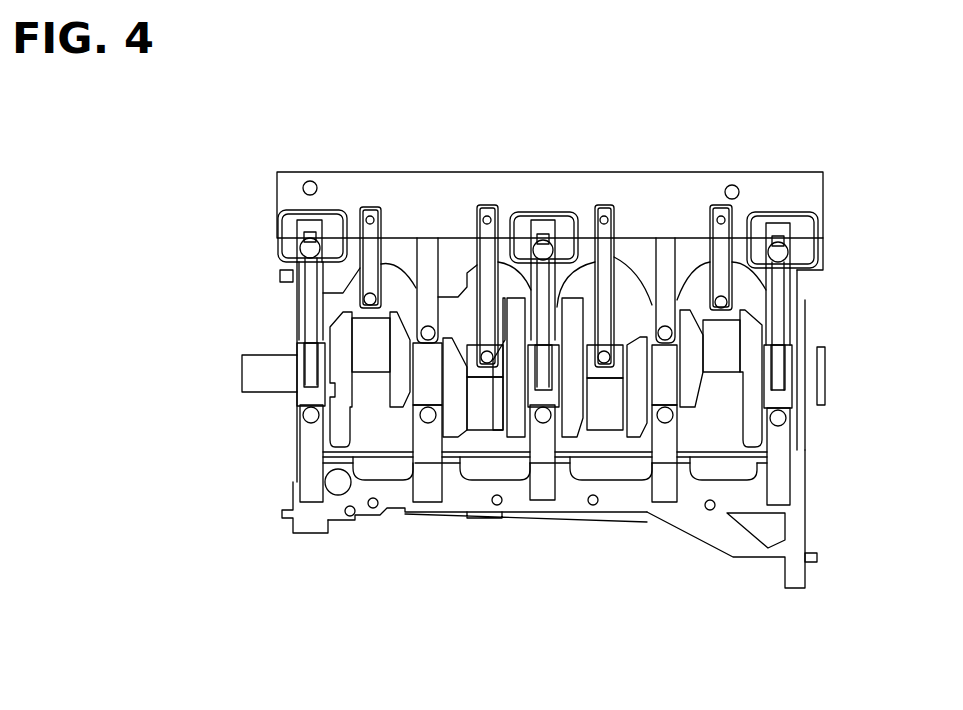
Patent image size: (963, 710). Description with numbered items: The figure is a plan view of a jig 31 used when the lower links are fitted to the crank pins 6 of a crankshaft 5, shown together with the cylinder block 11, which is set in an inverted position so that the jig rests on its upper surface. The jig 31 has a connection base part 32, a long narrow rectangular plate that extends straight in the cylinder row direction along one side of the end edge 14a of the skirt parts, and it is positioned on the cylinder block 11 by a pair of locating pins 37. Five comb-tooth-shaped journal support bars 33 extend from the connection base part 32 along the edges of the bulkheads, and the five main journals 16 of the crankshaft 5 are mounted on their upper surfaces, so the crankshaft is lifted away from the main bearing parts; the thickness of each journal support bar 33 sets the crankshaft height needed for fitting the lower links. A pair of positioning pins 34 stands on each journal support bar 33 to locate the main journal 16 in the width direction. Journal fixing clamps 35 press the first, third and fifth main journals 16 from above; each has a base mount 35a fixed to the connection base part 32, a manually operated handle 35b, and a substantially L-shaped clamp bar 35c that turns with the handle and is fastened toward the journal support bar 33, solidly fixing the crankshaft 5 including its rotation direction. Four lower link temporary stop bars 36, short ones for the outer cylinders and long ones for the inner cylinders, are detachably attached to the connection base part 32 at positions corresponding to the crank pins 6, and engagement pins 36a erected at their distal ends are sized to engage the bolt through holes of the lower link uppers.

The crankshaft 5 is at (288, 406).
The crank pin 6 is at (365, 337).
The cylinder block 11 is at (727, 562).
The end edge 14a is at (628, 497).
The main journal 16 is at (800, 360).
The jig 31 is at (822, 165).
The connection base part 32 is at (672, 205).
The journal support bar 33 is at (308, 455).
The positioning pin 34 is at (428, 325).
The journal fixing clamp 35 is at (548, 258).
The base mount 35a is at (292, 230).
The handle 35b is at (313, 240).
The clamp bar 35c is at (310, 362).
The lower link temporary stop bar 36 is at (371, 232).
The engagement pin 36a is at (375, 293).
The locating pin 37 is at (310, 182).